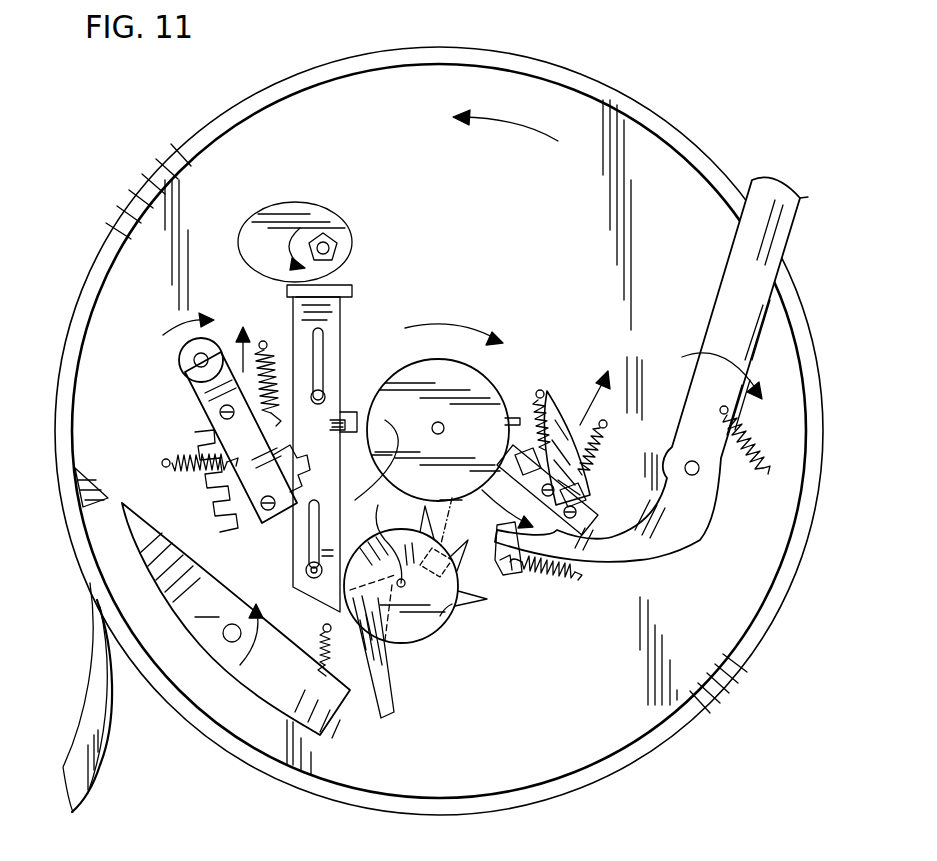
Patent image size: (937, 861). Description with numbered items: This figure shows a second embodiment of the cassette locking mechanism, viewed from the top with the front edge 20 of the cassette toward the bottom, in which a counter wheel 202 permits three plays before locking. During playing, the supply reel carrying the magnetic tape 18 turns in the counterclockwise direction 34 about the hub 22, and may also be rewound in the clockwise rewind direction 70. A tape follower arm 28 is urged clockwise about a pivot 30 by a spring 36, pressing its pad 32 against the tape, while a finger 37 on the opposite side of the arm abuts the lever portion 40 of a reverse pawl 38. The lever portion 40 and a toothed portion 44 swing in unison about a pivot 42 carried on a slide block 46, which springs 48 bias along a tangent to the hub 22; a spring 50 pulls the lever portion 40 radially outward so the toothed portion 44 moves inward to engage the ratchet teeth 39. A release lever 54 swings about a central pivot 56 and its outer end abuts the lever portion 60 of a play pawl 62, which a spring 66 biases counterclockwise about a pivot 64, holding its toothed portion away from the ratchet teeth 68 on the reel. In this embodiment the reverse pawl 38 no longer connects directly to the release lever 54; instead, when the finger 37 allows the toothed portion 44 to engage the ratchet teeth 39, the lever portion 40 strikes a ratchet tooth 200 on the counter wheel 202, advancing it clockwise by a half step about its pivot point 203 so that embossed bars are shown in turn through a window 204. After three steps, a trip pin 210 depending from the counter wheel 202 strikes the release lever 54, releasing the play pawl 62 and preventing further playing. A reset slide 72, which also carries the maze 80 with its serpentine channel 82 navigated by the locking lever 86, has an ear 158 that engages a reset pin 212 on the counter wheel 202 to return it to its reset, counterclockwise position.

The magnetic tape 18 is at (82, 757).
The front edge 20 is at (842, 645).
The hub 22 is at (495, 393).
The tape follower arm 28 is at (738, 292).
The pivot 30 is at (702, 474).
The pad 32 is at (822, 220).
The counterclockwise direction 34 is at (505, 127).
The spring 36 is at (760, 460).
The finger 37 is at (658, 535).
The reverse pawl 38 is at (582, 498).
The ratchet teeth 39 is at (357, 418).
The lever portion 40 is at (510, 588).
The pivot 42 is at (498, 466).
The toothed portion 44 is at (597, 365).
The slide block 46 is at (511, 415).
The springs 48 is at (562, 393).
The spring 50 is at (582, 570).
The release lever 54 is at (386, 705).
The pivot 56 is at (375, 620).
The lever portion 60 is at (325, 712).
The play pawl 62 is at (236, 619).
The pivot 64 is at (233, 618).
The spring 66 is at (322, 640).
The ratchet teeth 68 is at (98, 490).
The clockwise rewind direction 70 is at (428, 320).
The reset slide 72 is at (341, 322).
The maze 80 is at (203, 428).
The serpentine channel 82 is at (225, 502).
The locking lever 86 is at (188, 385).
The ear 158 is at (382, 455).
The ratchet tooth 200 is at (470, 598).
The counter wheel 202 is at (450, 612).
The pivot point 203 is at (378, 530).
The window 204 is at (453, 500).
The trip pin 210 is at (440, 628).
The reset pin 212 is at (372, 588).